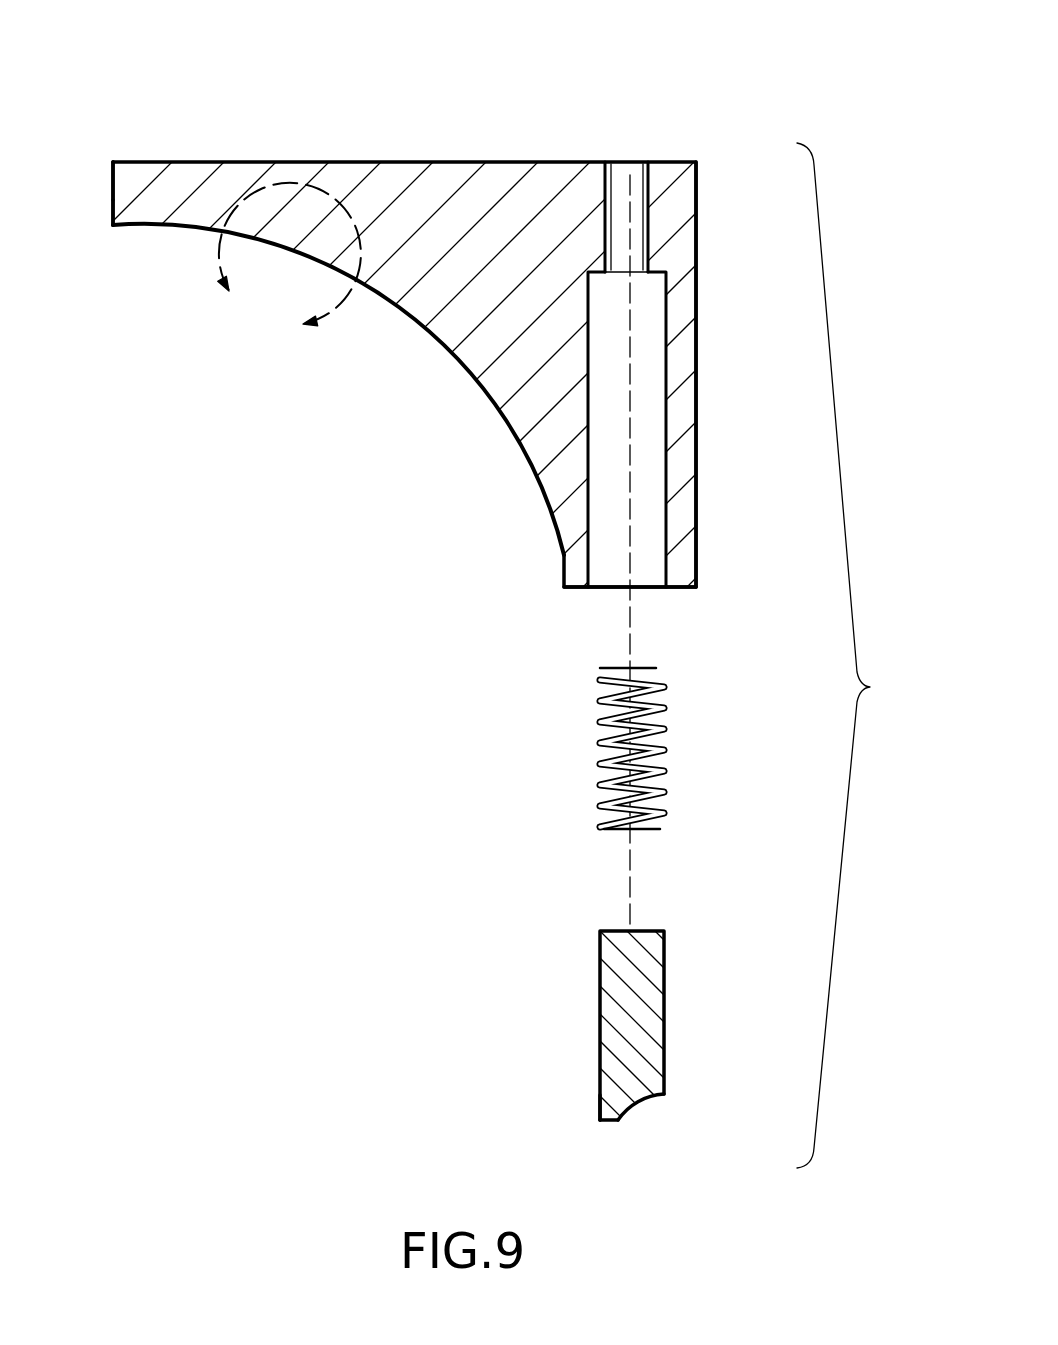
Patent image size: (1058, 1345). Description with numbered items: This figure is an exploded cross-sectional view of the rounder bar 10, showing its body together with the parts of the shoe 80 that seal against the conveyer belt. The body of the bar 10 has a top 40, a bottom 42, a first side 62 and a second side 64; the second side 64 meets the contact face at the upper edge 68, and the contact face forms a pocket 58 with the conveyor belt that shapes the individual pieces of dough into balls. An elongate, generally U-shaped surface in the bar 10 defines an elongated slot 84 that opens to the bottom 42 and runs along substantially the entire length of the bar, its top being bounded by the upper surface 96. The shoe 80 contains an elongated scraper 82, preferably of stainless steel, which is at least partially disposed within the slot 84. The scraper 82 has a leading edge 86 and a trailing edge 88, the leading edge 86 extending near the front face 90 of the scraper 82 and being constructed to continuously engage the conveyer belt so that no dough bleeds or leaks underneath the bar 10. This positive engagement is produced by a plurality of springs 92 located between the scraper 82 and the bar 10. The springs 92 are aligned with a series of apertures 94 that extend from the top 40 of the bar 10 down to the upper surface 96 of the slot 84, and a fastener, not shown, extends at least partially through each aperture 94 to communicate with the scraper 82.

The bar 10 is at (668, 88).
The top 40 is at (394, 162).
The bottom 42 is at (680, 588).
The pocket 58 is at (348, 440).
The first side 62 is at (698, 490).
The second side 64 is at (112, 205).
The upper edge 68 is at (112, 227).
The shoe 80 is at (854, 655).
The scraper 82 is at (664, 1018).
The elongated slot 84 is at (643, 423).
The leading edge 86 is at (598, 1117).
The trailing edge 88 is at (664, 1093).
The front face 90 is at (598, 1097).
The springs 92 is at (652, 735).
The apertures 94 is at (637, 202).
The upper surface 96 is at (660, 268).